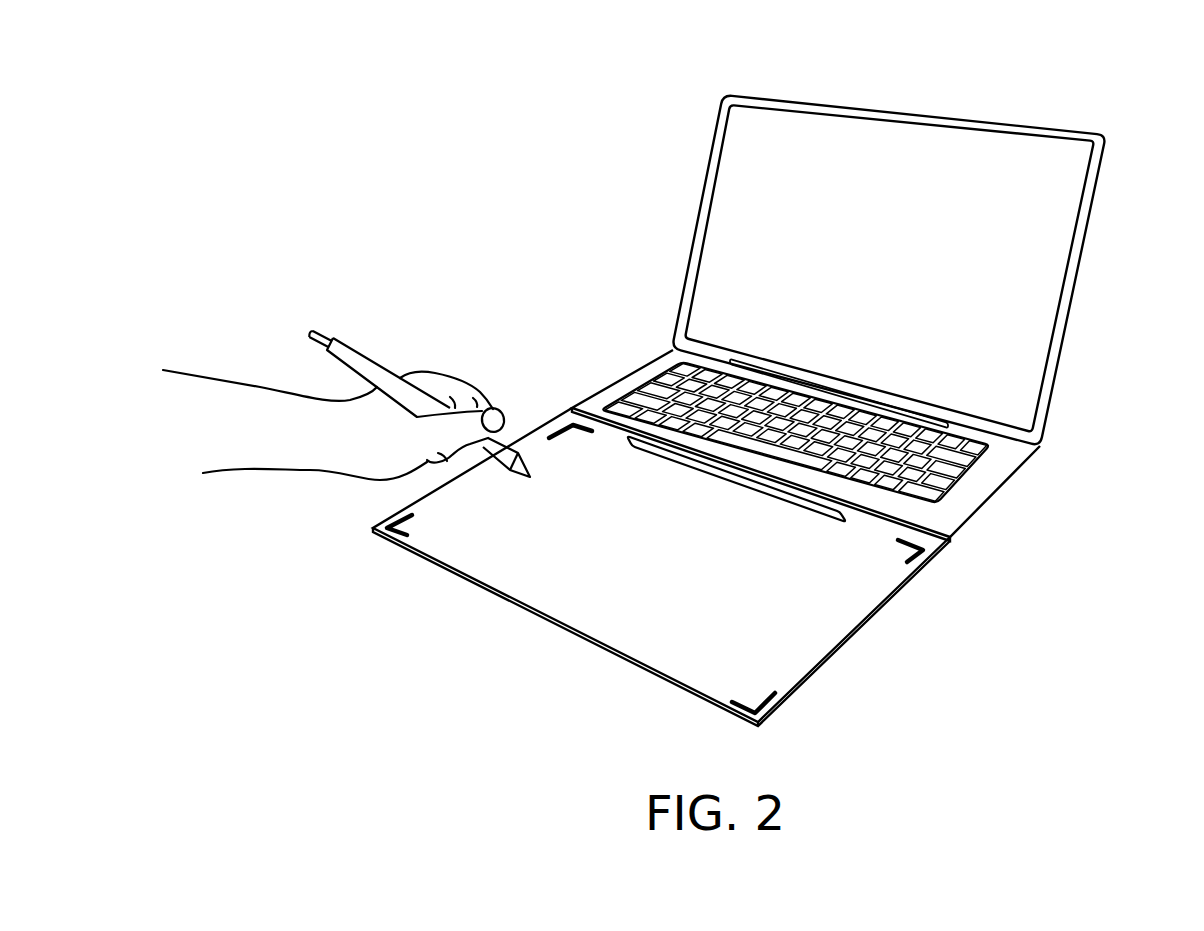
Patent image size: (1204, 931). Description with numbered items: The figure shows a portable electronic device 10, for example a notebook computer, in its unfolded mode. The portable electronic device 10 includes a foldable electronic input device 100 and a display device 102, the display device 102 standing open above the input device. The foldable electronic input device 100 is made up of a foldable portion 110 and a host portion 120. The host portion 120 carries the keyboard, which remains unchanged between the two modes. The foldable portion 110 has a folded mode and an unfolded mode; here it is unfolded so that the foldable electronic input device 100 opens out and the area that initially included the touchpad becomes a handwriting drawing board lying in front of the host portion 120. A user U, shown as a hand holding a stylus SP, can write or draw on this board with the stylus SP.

The portable electronic device 10 is at (1044, 79).
The foldable electronic input device 100 is at (990, 502).
The display device 102 is at (1075, 285).
The foldable portion 110 is at (840, 604).
The host portion 120 is at (635, 380).
The stylus SP is at (360, 348).
The user U is at (215, 395).